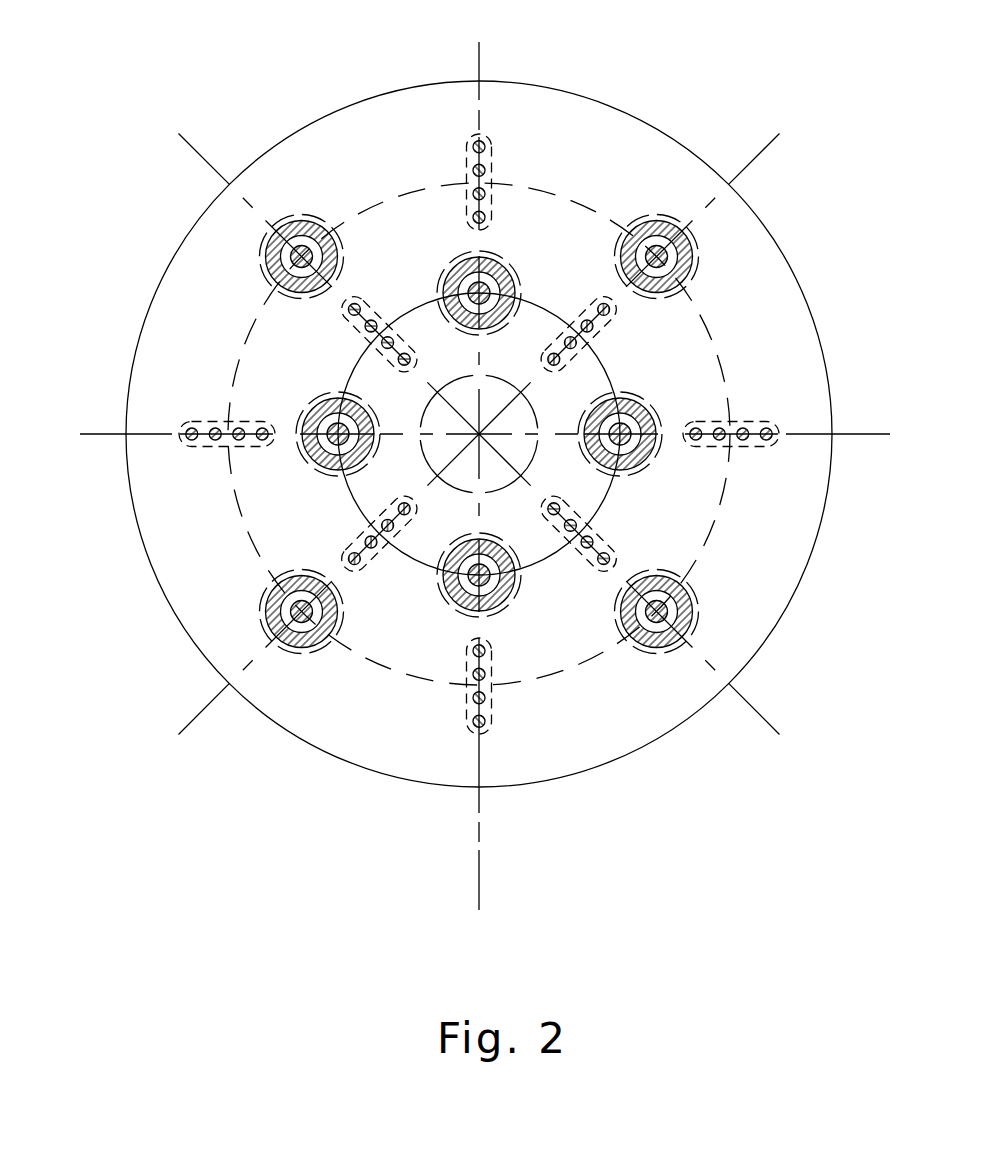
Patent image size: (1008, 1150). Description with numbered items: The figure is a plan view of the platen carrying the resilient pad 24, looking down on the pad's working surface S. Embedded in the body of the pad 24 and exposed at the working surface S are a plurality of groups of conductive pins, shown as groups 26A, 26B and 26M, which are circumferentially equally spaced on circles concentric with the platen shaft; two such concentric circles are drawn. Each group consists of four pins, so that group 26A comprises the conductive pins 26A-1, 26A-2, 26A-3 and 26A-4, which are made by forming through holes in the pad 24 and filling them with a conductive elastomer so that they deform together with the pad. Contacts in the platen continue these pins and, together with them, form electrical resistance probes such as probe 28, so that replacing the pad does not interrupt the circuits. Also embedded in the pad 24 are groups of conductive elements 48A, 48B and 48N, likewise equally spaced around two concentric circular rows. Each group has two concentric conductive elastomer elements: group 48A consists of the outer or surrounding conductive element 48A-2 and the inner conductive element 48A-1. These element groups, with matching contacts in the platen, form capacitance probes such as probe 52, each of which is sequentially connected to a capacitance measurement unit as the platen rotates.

The pad 24 is at (797, 268).
The electrical resistance probe 28 is at (492, 148).
The capacitance probe 52 is at (672, 210).
The group of conductive elements 48N is at (288, 205).
The group of conductive pins 26A is at (151, 414).
The conductive pin 26A-1 is at (188, 439).
The conductive pin 26A-2 is at (211, 439).
The conductive pin 26A-3 is at (234, 439).
The conductive pin 26A-4 is at (258, 439).
The group of conductive elements 48A is at (753, 465).
The inner conductive element 48A-1 is at (632, 438).
The outer conductive element 48A-2 is at (655, 410).
The group of conductive elements 48B is at (707, 632).
The working surface S is at (622, 730).
The group of conductive pins 26B is at (380, 575).
The group of conductive pins 26M is at (508, 722).